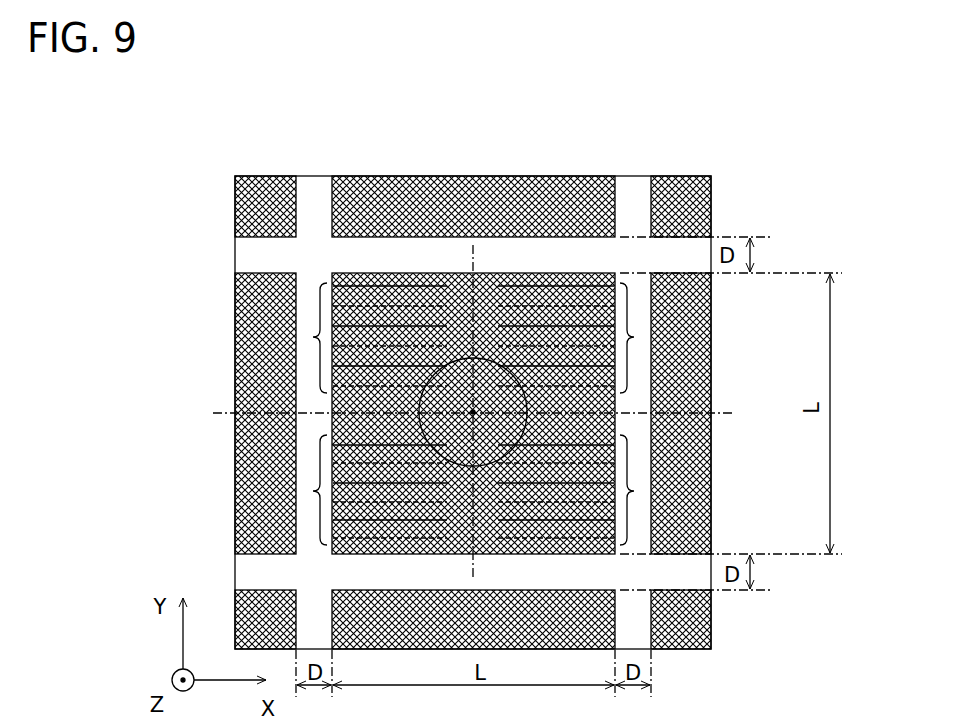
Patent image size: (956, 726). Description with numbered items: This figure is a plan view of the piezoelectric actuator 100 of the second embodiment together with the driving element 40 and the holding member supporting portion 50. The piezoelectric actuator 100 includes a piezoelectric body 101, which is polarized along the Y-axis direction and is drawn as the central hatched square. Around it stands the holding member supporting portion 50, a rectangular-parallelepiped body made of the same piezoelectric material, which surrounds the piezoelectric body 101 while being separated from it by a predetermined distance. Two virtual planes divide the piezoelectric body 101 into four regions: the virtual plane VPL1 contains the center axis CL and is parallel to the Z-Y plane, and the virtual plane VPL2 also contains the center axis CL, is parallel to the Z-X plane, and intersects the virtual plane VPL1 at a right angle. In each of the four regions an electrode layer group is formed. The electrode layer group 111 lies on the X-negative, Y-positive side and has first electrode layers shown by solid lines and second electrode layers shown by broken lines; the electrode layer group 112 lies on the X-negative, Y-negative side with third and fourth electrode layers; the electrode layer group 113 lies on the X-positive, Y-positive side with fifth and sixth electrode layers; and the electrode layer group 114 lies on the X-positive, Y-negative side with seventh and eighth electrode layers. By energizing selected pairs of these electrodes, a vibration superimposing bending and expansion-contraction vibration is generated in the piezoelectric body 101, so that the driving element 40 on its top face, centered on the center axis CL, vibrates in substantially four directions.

The holding member supporting portion 50 is at (262, 176).
The piezoelectric actuator 100 is at (586, 256).
The piezoelectric body 101 is at (489, 273).
The electrode layer group 111 is at (313, 337).
The electrode layer group 112 is at (313, 491).
The electrode layer group 113 is at (634, 337).
The electrode layer group 114 is at (634, 491).
The driving element 40 is at (462, 466).
The center axis CL is at (478, 422).
The virtual plane VPL1 is at (472, 250).
The virtual plane VPL2 is at (222, 413).